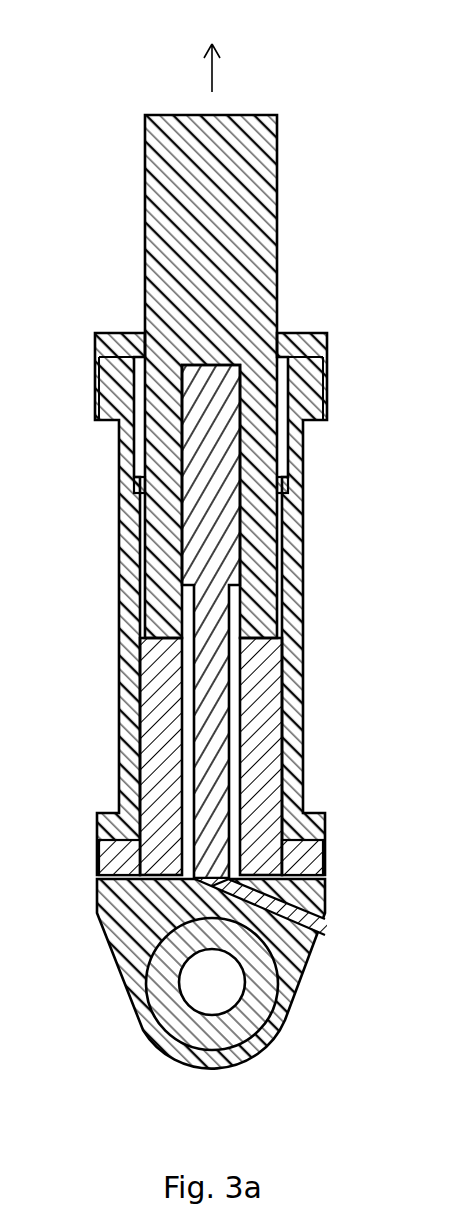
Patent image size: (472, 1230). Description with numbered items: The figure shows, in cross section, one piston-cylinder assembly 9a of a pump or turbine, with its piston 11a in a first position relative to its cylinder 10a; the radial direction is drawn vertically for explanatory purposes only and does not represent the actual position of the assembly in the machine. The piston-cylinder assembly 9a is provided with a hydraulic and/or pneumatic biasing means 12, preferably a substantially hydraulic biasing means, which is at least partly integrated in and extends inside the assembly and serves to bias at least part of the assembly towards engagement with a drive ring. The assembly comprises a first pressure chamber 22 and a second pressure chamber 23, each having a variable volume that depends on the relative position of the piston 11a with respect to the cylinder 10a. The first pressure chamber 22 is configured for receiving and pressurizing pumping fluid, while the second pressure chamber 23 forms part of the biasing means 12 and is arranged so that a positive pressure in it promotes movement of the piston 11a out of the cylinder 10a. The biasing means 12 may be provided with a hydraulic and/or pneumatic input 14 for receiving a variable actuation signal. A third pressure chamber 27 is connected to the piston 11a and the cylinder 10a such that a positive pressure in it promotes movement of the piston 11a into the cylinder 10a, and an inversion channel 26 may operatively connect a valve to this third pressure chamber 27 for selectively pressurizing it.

The piston-cylinder assembly 9a is at (236, 541).
The cylinder 10a is at (132, 617).
The piston 11a is at (187, 168).
The hydraulic and/or pneumatic biasing means 12 is at (248, 743).
The hydraulic and/or pneumatic input 14 is at (322, 935).
The first pressure chamber 22 is at (170, 745).
The second pressure chamber 23 is at (213, 810).
The inversion channel 26 is at (306, 482).
The third pressure chamber 27 is at (140, 487).